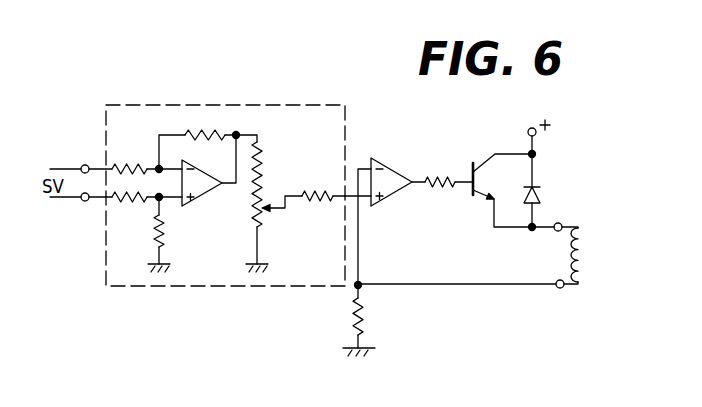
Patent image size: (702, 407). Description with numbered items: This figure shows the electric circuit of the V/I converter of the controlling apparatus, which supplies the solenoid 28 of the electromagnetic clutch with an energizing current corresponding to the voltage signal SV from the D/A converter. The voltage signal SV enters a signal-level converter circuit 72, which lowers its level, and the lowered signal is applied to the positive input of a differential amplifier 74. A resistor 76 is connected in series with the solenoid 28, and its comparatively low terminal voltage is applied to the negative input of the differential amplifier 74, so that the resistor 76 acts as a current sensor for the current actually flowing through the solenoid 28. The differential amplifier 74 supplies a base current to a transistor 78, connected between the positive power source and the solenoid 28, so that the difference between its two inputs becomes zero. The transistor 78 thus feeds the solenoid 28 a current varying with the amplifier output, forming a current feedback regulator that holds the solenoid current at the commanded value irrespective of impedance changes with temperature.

The signal-level converter circuit 72 is at (235, 289).
The differential amplifier 74 is at (393, 177).
The resistor 76 is at (361, 320).
The transistor 78 is at (472, 175).
The solenoid 28 is at (585, 238).